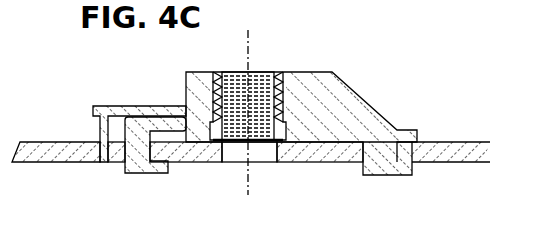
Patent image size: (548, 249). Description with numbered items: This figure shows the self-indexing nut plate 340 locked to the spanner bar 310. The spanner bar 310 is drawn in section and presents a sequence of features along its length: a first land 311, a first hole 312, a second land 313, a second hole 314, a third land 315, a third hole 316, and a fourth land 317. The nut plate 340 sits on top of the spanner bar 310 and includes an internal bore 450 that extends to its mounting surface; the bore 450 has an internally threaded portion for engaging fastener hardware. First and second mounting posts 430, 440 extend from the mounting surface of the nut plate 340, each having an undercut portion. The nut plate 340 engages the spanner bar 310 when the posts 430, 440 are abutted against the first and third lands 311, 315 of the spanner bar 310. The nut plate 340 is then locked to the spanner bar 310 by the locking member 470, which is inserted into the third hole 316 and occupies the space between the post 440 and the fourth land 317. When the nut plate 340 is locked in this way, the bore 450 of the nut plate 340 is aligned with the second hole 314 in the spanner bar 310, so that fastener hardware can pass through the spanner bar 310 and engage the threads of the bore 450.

The spanner bar 310 is at (266, 159).
The first land 311 is at (451, 168).
The first hole 312 is at (365, 179).
The second land 313 is at (320, 186).
The second hole 314 is at (249, 178).
The third land 315 is at (186, 178).
The third hole 316 is at (83, 172).
The fourth land 317 is at (56, 124).
The self-indexing nut plate 340 is at (301, 96).
The first mounting post 430 is at (409, 186).
The second mounting post 440 is at (128, 176).
The internal bore 450 is at (262, 88).
The locking member 470 is at (104, 126).